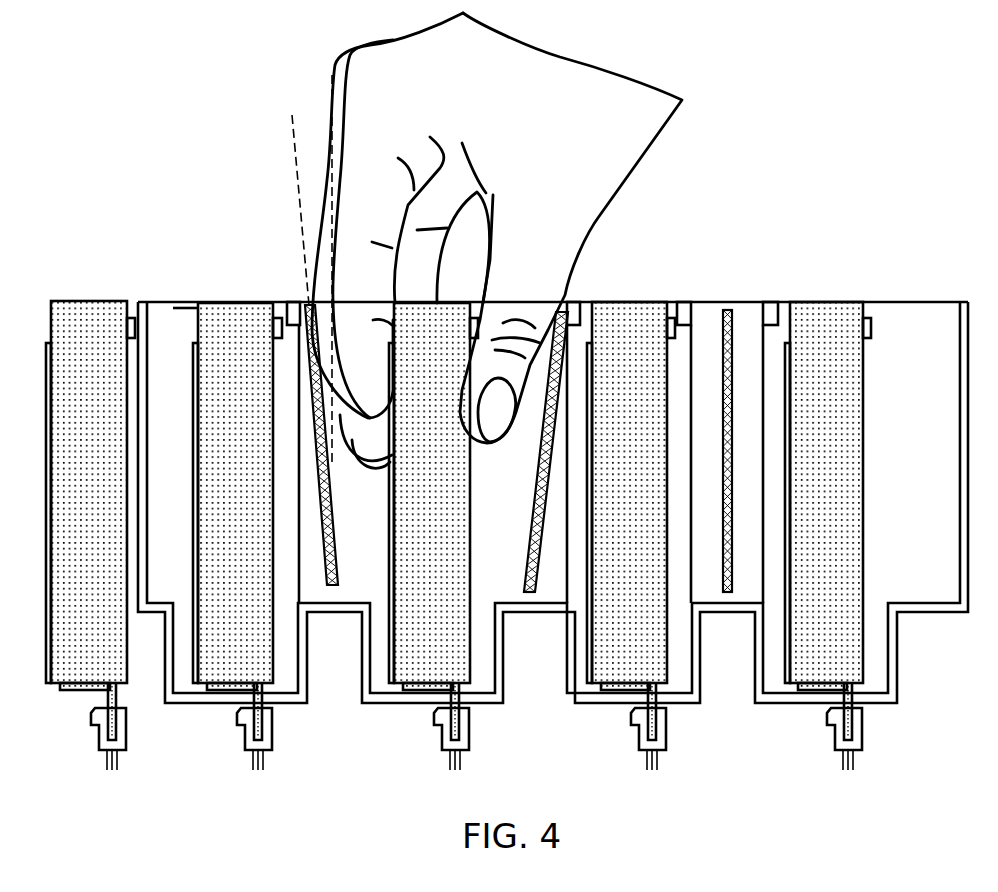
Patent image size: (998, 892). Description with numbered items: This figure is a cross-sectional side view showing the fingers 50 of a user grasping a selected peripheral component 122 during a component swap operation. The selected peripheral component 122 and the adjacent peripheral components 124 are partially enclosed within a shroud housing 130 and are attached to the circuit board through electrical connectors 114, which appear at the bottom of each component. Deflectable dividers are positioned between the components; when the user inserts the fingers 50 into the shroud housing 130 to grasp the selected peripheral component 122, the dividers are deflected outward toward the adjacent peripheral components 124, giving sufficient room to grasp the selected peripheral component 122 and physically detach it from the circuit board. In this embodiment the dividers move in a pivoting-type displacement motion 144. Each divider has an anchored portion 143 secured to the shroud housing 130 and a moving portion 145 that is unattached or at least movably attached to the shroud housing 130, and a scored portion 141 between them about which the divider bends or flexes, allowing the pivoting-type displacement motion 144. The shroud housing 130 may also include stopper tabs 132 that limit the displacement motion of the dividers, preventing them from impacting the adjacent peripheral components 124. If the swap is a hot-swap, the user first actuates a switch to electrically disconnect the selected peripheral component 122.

The fingers 50 is at (387, 122).
The electrical connectors 114 is at (104, 748).
The selected peripheral component 122 is at (438, 667).
The adjacent peripheral components 124 is at (235, 325).
The shroud housing 130 is at (180, 704).
The stopper tabs 132 is at (641, 417).
The scored portion 141 is at (552, 489).
The anchored portion 143 is at (540, 592).
The pivoting-type displacement motion 144 is at (329, 136).
The moving portion 145 is at (565, 340).